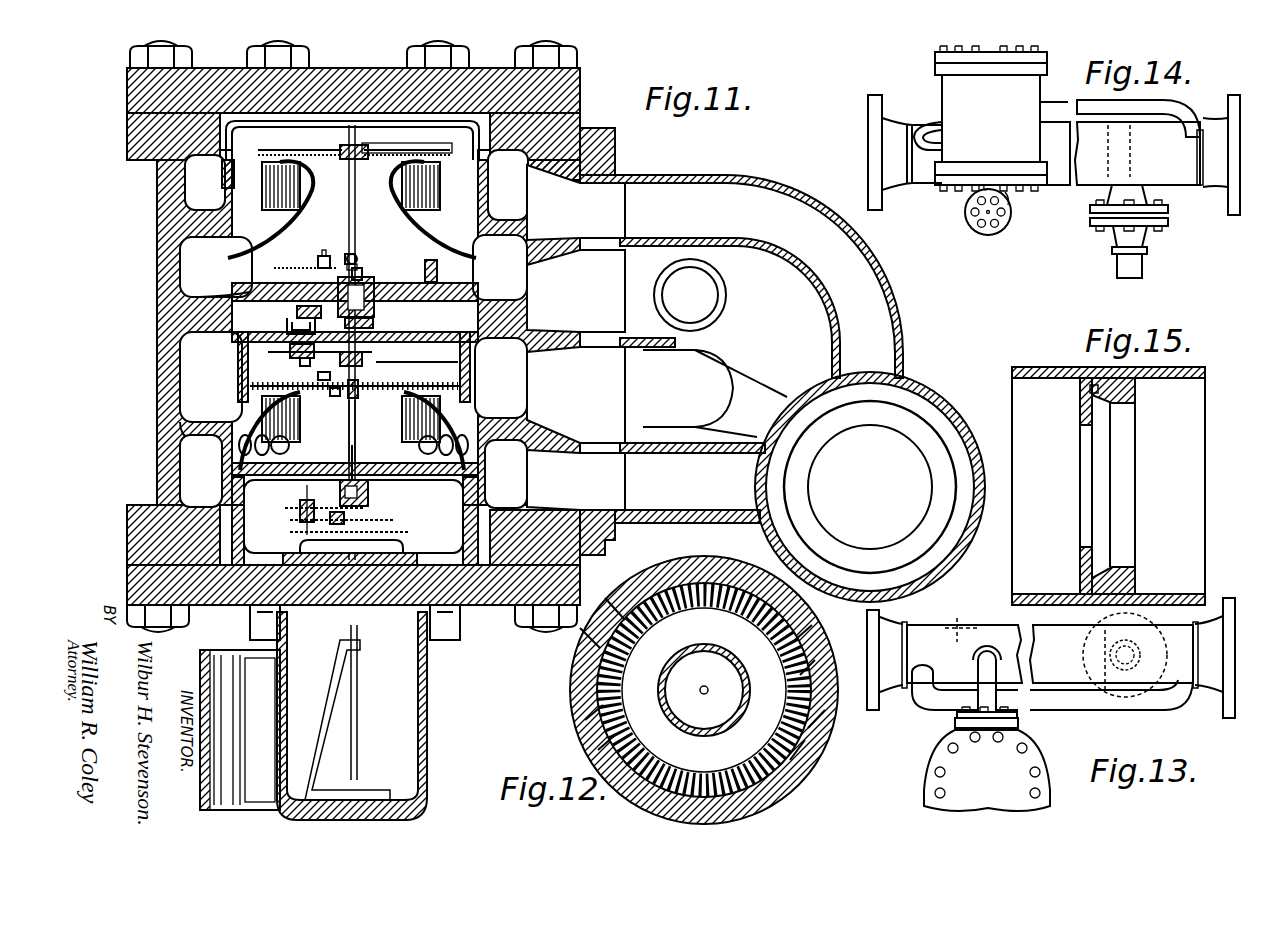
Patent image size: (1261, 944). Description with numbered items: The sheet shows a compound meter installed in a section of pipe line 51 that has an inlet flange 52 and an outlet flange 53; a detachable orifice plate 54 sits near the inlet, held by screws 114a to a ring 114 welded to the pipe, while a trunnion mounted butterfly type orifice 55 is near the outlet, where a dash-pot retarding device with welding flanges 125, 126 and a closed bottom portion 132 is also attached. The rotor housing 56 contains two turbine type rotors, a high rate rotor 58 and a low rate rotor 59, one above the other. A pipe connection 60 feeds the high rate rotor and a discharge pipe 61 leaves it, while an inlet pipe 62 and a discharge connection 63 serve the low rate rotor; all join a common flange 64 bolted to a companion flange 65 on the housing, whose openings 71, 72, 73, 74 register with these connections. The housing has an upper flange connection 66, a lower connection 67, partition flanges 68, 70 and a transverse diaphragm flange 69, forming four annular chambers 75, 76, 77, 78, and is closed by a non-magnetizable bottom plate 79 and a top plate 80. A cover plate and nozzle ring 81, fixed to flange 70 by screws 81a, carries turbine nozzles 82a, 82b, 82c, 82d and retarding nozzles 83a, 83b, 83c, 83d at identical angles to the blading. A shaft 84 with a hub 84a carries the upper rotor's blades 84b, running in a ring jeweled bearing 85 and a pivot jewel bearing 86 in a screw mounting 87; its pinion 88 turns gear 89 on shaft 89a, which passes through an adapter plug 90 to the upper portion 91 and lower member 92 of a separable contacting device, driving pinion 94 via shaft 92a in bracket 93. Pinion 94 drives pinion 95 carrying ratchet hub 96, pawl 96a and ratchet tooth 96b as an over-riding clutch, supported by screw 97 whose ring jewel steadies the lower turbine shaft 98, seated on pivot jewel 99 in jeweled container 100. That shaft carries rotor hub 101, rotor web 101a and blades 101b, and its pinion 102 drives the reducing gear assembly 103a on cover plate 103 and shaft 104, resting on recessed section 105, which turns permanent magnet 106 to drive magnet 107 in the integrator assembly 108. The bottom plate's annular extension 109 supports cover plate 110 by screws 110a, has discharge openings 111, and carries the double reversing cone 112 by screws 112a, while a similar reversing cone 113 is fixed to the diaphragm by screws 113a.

In FIG. 11, the section of pipe line 51 is at (935, 396).
In FIG. 13, the section of pipe line 51 is at (1006, 628).
In FIG. 14, the section of pipe line 51 is at (1063, 188).
In FIG. 15, the section of pipe line 51 is at (1050, 368).
In FIG. 13, the inlet flange 52 is at (878, 712).
In FIG. 14, the inlet flange 52 is at (868, 122).
In FIG. 13, the outlet flange 53 is at (1245, 588).
In FIG. 14, the outlet flange 53 is at (1238, 95).
In FIG. 11, the detachable orifice plate 54 is at (902, 450).
In FIG. 13, the detachable orifice plate 54 is at (957, 620).
In FIG. 15, the detachable orifice plate 54 is at (1080, 415).
In FIG. 13, the trunnion mounted butterfly type orifice 55 is at (1105, 630).
In FIG. 14, the trunnion mounted butterfly type orifice 55 is at (1110, 188).
In FIG. 11, the rotor housing 56 is at (157, 328).
In FIG. 14, the rotor housing 56 is at (942, 89).
In FIG. 11, the high rate rotor 58 is at (424, 376).
In FIG. 11, the low rate rotor 59 is at (430, 152).
In FIG. 12, the low rate rotor 59 is at (636, 643).
In FIG. 11, the pipe connection 60 is at (780, 397).
In FIG. 13, the pipe connection 60 is at (922, 698).
In FIG. 14, the pipe connection 60 is at (940, 125).
In FIG. 11, the discharge pipe 61 is at (668, 516).
In FIG. 11, the inlet pipe 62 is at (735, 175).
In FIG. 13, the inlet pipe 62 is at (978, 672).
In FIG. 11, the discharge connection 63 is at (727, 299).
In FIG. 13, the discharge connection 63 is at (1086, 711).
In FIG. 14, the discharge connection 63 is at (1173, 101).
In FIG. 11, the common flange 64 is at (615, 143).
In FIG. 13, the common flange 64 is at (957, 714).
In FIG. 11, the companion flange 65 is at (580, 117).
In FIG. 13, the companion flange 65 is at (955, 726).
In FIG. 11, the upper flange connection 66 is at (127, 124).
In FIG. 14, the upper flange connection 66 is at (935, 69).
In FIG. 11, the lower connection 67 is at (127, 528).
In FIG. 14, the lower connection 67 is at (942, 176).
In FIG. 11, the partition flange 68 is at (190, 428).
In FIG. 11, the transverse diaphragm flange 69 is at (252, 292).
In FIG. 11, the partition flange 70 is at (220, 230).
In FIG. 11, the opening 71 is at (576, 480).
In FIG. 11, the opening 72 is at (576, 395).
In FIG. 11, the opening 73 is at (576, 291).
In FIG. 11, the opening 74 is at (576, 202).
In FIG. 11, the annular chamber 75 is at (353, 471).
In FIG. 11, the annular chamber 76 is at (353, 377).
In FIG. 11, the annular chamber 77 is at (353, 267).
In FIG. 11, the annular chamber 78 is at (356, 185).
In FIG. 11, the bottom plate 79 is at (127, 581).
In FIG. 14, the bottom plate 79 is at (945, 187).
In FIG. 11, the top plate 80 is at (127, 78).
In FIG. 13, the top plate 80 is at (1042, 758).
In FIG. 14, the top plate 80 is at (935, 56).
In FIG. 11, the cover plate and nozzle ring 81 is at (268, 129).
In FIG. 12, the cover plate and nozzle ring 81 is at (735, 567).
In FIG. 11, the screws 81a is at (225, 170).
In FIG. 12, the turbine nozzle 82a is at (582, 657).
In FIG. 12, the turbine nozzle 82b is at (614, 608).
In FIG. 12, the turbine nozzle 82c is at (812, 772).
In FIG. 12, the turbine nozzle 82d is at (825, 737).
In FIG. 12, the retarding nozzle 83a is at (580, 719).
In FIG. 12, the retarding nozzle 83b is at (592, 748).
In FIG. 12, the retarding nozzle 83c is at (820, 656).
In FIG. 12, the retarding nozzle 83d is at (816, 632).
In FIG. 11, the shaft 84 is at (356, 229).
In FIG. 12, the shaft 84 is at (708, 690).
In FIG. 11, the hub 84a is at (360, 170).
In FIG. 11, the blades 84b is at (354, 190).
In FIG. 11, the ring jeweled bearing 85 is at (336, 133).
In FIG. 11, the pivot jewel bearing 86 is at (364, 278).
In FIG. 11, the screw mounting 87 is at (374, 304).
In FIG. 11, the pinion 88 is at (358, 256).
In FIG. 11, the gear 89 is at (315, 268).
In FIG. 11, the shaft 89a is at (348, 258).
In FIG. 11, the adapter plug 90 is at (300, 272).
In FIG. 11, the upper portion of separable contacting device 91 is at (300, 313).
In FIG. 11, the lower member of contacting device 92 is at (300, 332).
In FIG. 11, the shaft 92a is at (373, 323).
In FIG. 11, the bracket 93 is at (295, 362).
In FIG. 11, the pinion 94 is at (305, 370).
In FIG. 11, the pinion 95 is at (375, 354).
In FIG. 11, the ratchet hub 96 is at (372, 373).
In FIG. 11, the pawl 96a is at (330, 380).
In FIG. 11, the ratchet tooth 96b is at (340, 393).
In FIG. 11, the screw 97 is at (360, 388).
In FIG. 11, the lower turbine shaft 98 is at (356, 425).
In FIG. 11, the pivot jewel 99 is at (368, 510).
In FIG. 11, the jeweled container 100 is at (365, 498).
In FIG. 11, the rotor hub 101 is at (355, 394).
In FIG. 11, the rotor web 101a is at (364, 374).
In FIG. 11, the blades 101b is at (349, 419).
In FIG. 11, the pinion 102 is at (356, 462).
In FIG. 11, the cover plate 103 is at (428, 514).
In FIG. 11, the reducing gear assembly 103a is at (287, 495).
In FIG. 11, the shaft 104 is at (350, 540).
In FIG. 11, the recessed section 105 is at (417, 567).
In FIG. 11, the permanent magnet 106 is at (404, 558).
In FIG. 11, the permanent magnet 107 is at (372, 620).
In FIG. 11, the integrator assembly 108 is at (428, 674).
In FIG. 14, the integrator assembly 108 is at (1010, 210).
In FIG. 11, the upper annular extension 109 is at (470, 378).
In FIG. 11, the cover plate 110 is at (440, 343).
In FIG. 11, the screws 110a is at (250, 350).
In FIG. 11, the openings 111 is at (356, 437).
In FIG. 11, the double reversing cone 112 is at (355, 447).
In FIG. 11, the screws 112a is at (232, 468).
In FIG. 11, the reversing cone 113 is at (420, 233).
In FIG. 12, the reversing cone 113 is at (682, 660).
In FIG. 11, the screws 113a is at (440, 257).
In FIG. 11, the ring 114 is at (942, 462).
In FIG. 15, the ring 114 is at (1135, 393).
In FIG. 15, the screws 114a is at (1090, 389).
In FIG. 13, the welding flange 125 is at (1145, 623).
In FIG. 14, the welding flange 125 is at (1168, 209).
In FIG. 14, the welding flange 126 is at (1168, 222).
In FIG. 14, the closed bottom portion 132 is at (1142, 269).